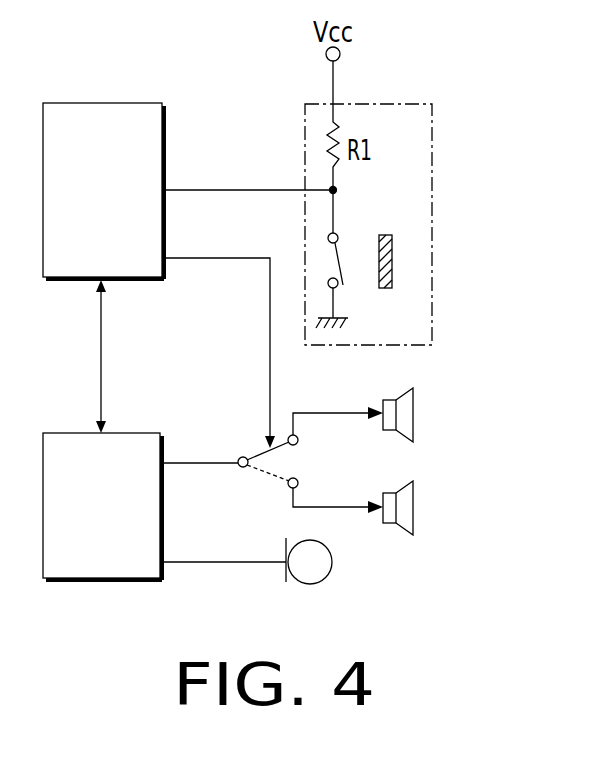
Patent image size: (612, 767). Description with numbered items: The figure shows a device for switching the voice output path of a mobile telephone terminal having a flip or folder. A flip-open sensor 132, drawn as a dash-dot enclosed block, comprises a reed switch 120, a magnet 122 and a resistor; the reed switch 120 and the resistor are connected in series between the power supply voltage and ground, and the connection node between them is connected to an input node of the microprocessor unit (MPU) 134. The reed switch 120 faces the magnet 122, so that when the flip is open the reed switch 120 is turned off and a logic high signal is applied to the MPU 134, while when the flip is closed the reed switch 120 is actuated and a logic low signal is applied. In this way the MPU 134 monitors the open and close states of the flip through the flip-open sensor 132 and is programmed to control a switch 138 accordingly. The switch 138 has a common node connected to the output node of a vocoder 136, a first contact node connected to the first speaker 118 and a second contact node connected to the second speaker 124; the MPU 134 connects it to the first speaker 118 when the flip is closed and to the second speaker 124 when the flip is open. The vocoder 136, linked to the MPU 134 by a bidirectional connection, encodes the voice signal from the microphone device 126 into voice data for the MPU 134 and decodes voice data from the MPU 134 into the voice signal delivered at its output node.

The first speaker 118 is at (413, 413).
The reed switch 120 is at (350, 262).
The magnet 122 is at (397, 262).
The second speaker 124 is at (413, 508).
The microphone device 126 is at (332, 562).
The flip-open sensor 132 is at (432, 143).
The microprocessor unit (MPU) 134 is at (100, 103).
The vocoder 136 is at (57, 433).
The switch 138 is at (287, 457).